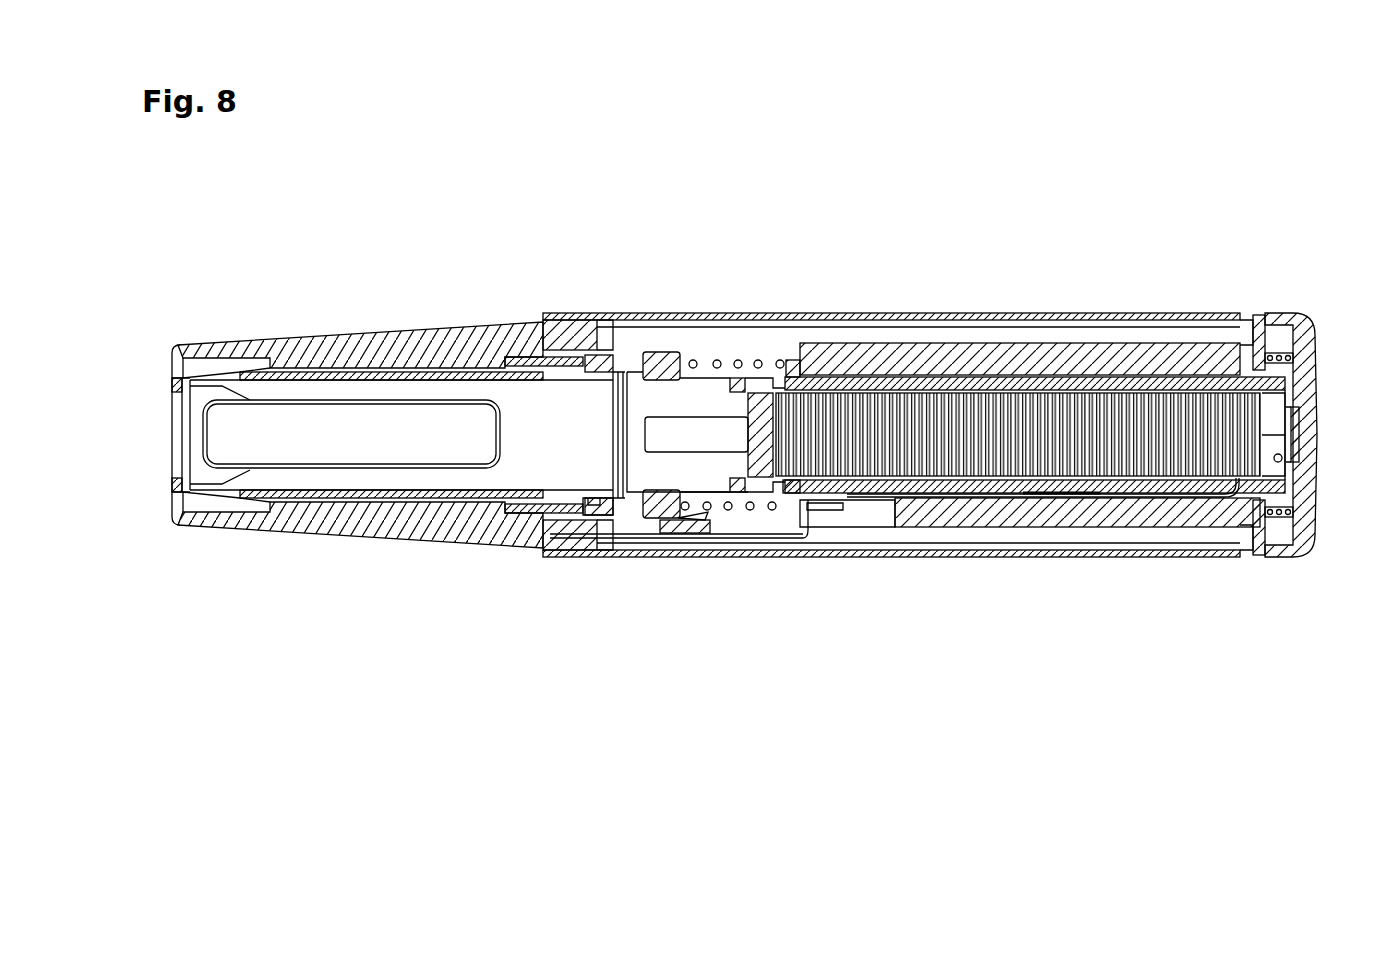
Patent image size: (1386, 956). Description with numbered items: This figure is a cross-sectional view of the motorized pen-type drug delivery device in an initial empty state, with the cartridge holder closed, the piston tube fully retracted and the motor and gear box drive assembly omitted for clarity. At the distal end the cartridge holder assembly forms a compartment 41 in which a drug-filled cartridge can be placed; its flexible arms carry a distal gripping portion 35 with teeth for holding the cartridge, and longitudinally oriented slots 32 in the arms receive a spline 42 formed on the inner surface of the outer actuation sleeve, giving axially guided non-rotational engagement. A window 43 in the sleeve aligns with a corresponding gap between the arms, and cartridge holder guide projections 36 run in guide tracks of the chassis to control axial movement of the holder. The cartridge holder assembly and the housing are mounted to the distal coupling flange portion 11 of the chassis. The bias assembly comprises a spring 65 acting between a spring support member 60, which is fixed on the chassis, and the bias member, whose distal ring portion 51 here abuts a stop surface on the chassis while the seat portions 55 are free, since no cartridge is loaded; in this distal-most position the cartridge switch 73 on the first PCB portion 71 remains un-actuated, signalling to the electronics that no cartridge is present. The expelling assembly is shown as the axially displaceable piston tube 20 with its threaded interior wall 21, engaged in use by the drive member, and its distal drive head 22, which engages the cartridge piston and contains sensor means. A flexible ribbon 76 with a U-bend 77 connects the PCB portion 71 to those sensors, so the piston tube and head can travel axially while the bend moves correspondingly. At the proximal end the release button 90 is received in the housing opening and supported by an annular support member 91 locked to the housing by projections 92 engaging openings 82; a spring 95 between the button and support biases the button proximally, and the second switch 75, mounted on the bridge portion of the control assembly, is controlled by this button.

The distal coupling flange portion 11 is at (567, 335).
The piston tube 20 is at (876, 472).
The threaded interior wall 21 is at (904, 448).
The distal drive head 22 is at (764, 447).
The slots 32 is at (385, 372).
The distal gripping portion 35 is at (188, 497).
The cartridge holder guide projections 36 is at (595, 502).
The compartment 41 is at (546, 405).
The spline 42 is at (338, 350).
The window 43 is at (362, 452).
The distal ring portion 51 is at (659, 365).
The seat portion 55 is at (742, 376).
The spring support member 60 is at (791, 360).
The spring 65 is at (717, 360).
The first PCB portion 71 is at (947, 520).
The cartridge switch 73 is at (692, 527).
The second switch 75 is at (1300, 458).
The flexible ribbon 76 is at (1090, 497).
The U-bend 77 is at (1228, 484).
The openings 82 is at (1263, 320).
The release button 90 is at (1308, 340).
The annular support member 91 is at (1258, 540).
The projections 92 is at (1257, 318).
The spring 95 is at (1279, 512).